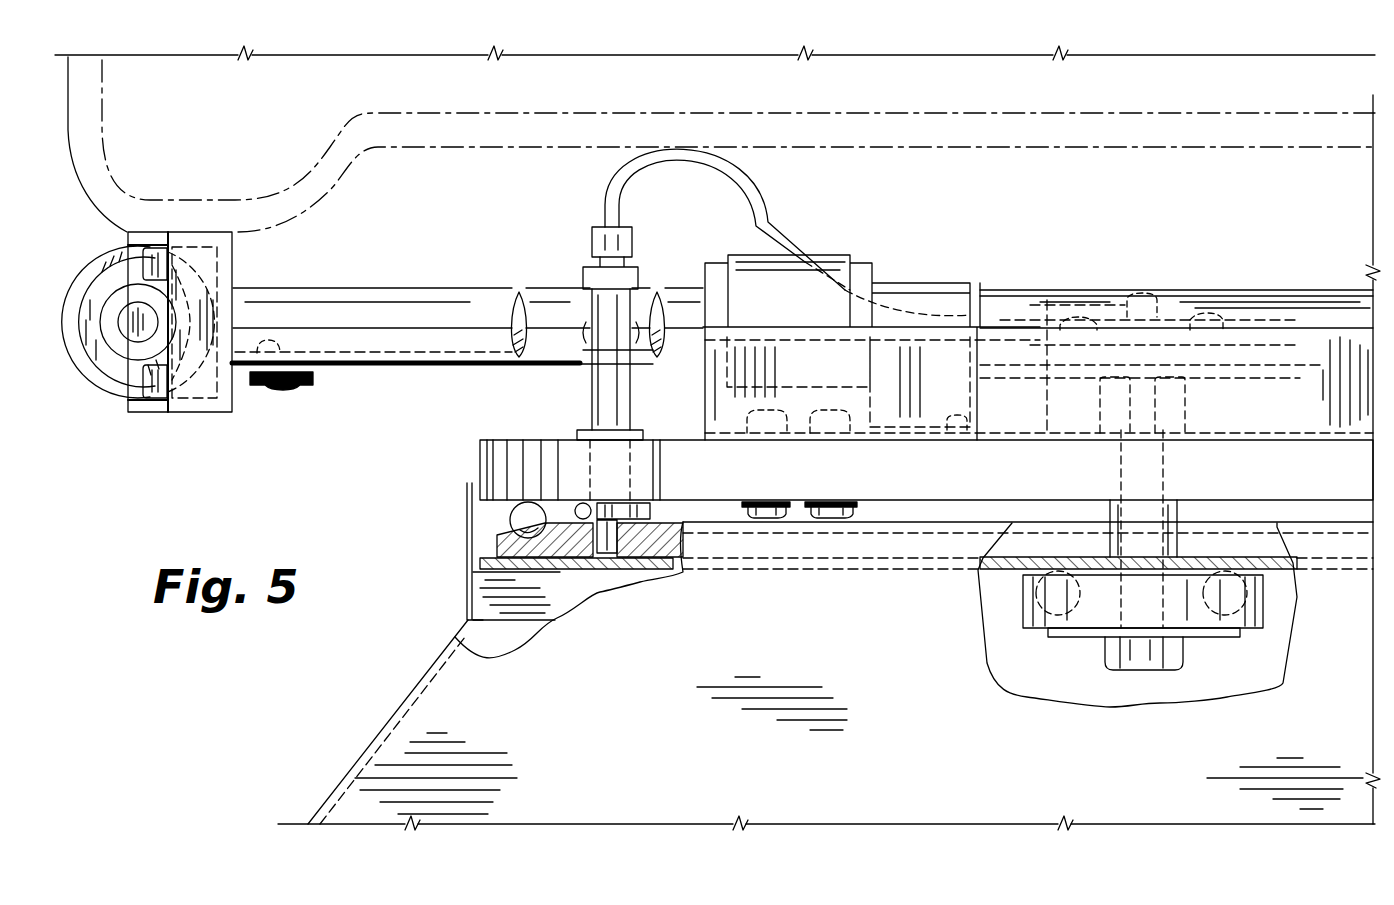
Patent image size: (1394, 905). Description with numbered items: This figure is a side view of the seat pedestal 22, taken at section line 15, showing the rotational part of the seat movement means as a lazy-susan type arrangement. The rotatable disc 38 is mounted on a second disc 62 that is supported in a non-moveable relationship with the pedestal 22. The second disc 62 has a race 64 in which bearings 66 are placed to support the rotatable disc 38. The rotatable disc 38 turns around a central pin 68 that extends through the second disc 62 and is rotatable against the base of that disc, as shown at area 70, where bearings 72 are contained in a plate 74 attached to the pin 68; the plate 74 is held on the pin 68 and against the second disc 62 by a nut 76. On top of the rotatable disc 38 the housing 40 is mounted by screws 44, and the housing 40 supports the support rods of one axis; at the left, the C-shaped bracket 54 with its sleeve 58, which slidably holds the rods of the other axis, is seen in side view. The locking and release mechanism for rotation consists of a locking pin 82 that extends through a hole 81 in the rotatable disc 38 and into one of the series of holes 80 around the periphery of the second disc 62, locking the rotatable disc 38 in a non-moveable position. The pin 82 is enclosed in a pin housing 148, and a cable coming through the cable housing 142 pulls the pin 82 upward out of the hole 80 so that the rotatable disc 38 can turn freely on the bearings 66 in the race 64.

The section line 15- 15 is at (607, 218).
The pedestal 22 is at (397, 748).
The rotatable disc 38 is at (1257, 462).
The housing 40 is at (1342, 410).
The screws 44 is at (770, 512).
The bracket 54 is at (155, 405).
The sleeve 58 is at (88, 278).
The second disc 62 is at (858, 545).
The race 64 is at (497, 552).
The bearings 66 is at (510, 512).
The central pin 68 is at (1135, 472).
The area 70 is at (1287, 598).
The bearings 72 is at (1045, 598).
The plate 74 is at (1205, 605).
The nut 76 is at (1148, 650).
The holes 80 is at (645, 570).
The hole 81 is at (628, 478).
The locking pin 82 is at (640, 525).
The cable housing 142 is at (628, 205).
The pin housing 148 is at (597, 390).